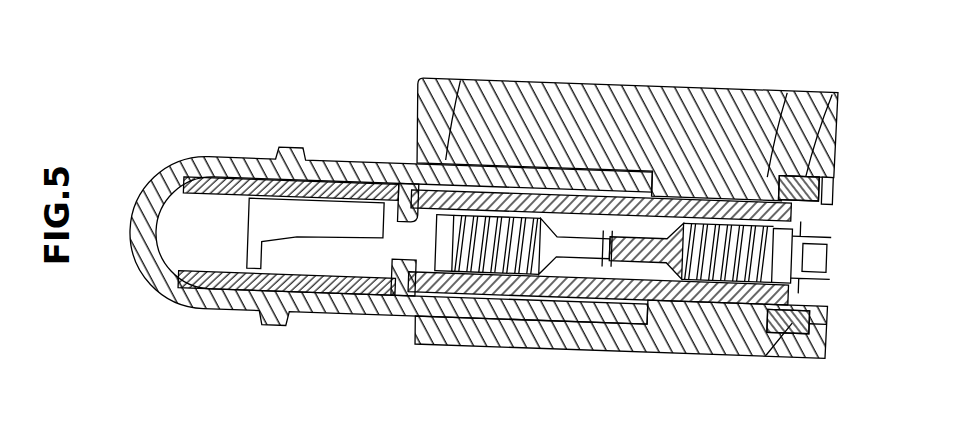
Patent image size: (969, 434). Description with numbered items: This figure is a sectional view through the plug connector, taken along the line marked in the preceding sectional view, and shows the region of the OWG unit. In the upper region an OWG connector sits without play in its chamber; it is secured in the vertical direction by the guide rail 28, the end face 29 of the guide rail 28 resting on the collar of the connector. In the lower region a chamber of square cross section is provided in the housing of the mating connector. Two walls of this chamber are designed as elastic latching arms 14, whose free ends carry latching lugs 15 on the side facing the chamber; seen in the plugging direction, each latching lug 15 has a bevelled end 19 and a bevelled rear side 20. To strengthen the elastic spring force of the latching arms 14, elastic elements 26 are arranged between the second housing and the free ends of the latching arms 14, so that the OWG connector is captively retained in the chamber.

The elastic latching arm 14 is at (737, 90).
The latching lug 15 is at (775, 352).
The bevelled end 19 is at (823, 295).
The bevelled rear side 20 is at (782, 92).
The elastic element 26 is at (825, 92).
The guide rail 28 is at (417, 160).
The end face 29 is at (458, 76).